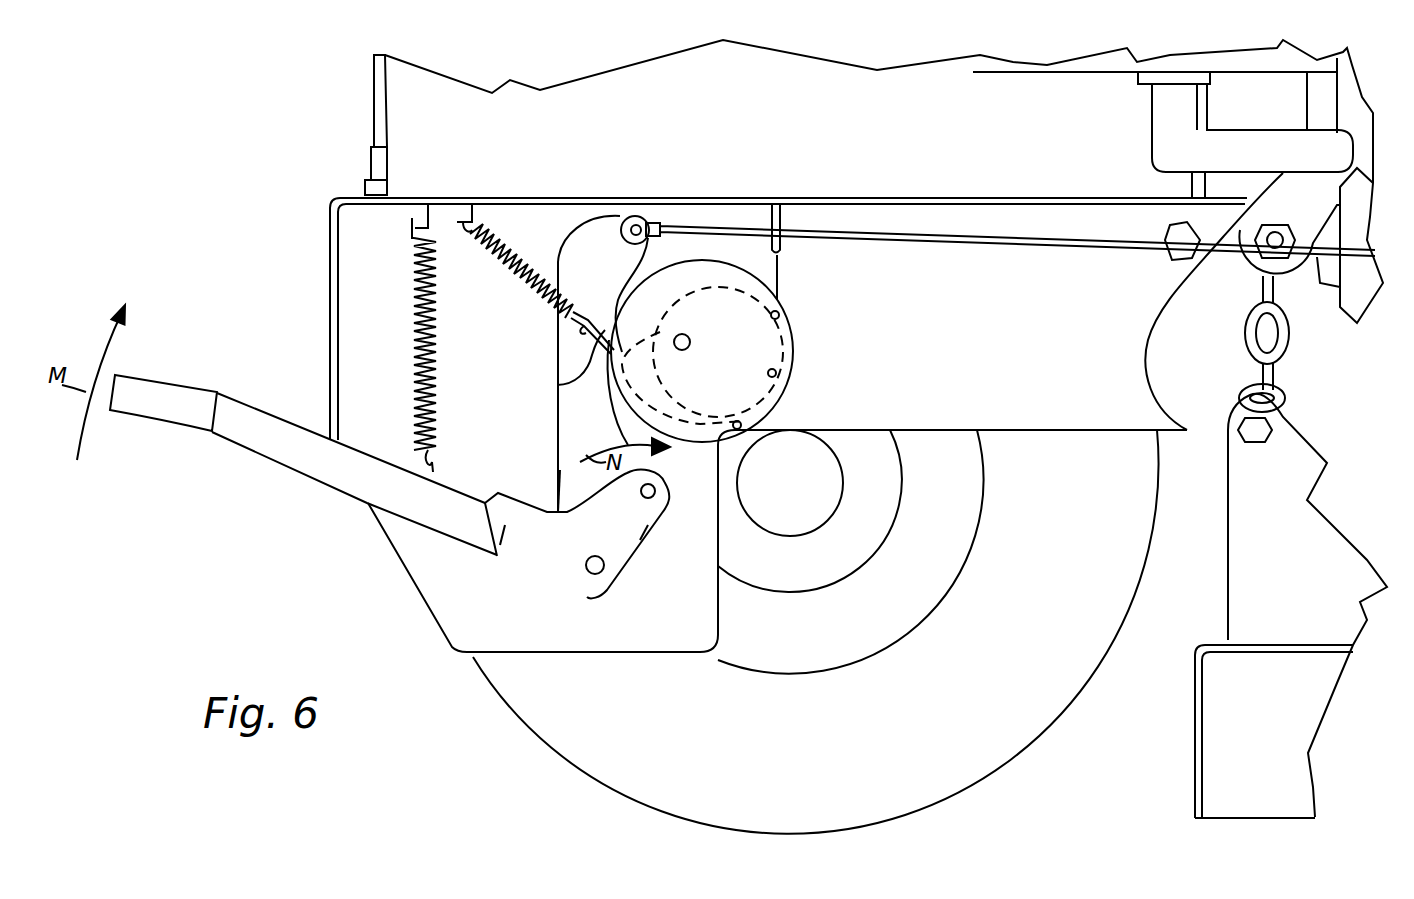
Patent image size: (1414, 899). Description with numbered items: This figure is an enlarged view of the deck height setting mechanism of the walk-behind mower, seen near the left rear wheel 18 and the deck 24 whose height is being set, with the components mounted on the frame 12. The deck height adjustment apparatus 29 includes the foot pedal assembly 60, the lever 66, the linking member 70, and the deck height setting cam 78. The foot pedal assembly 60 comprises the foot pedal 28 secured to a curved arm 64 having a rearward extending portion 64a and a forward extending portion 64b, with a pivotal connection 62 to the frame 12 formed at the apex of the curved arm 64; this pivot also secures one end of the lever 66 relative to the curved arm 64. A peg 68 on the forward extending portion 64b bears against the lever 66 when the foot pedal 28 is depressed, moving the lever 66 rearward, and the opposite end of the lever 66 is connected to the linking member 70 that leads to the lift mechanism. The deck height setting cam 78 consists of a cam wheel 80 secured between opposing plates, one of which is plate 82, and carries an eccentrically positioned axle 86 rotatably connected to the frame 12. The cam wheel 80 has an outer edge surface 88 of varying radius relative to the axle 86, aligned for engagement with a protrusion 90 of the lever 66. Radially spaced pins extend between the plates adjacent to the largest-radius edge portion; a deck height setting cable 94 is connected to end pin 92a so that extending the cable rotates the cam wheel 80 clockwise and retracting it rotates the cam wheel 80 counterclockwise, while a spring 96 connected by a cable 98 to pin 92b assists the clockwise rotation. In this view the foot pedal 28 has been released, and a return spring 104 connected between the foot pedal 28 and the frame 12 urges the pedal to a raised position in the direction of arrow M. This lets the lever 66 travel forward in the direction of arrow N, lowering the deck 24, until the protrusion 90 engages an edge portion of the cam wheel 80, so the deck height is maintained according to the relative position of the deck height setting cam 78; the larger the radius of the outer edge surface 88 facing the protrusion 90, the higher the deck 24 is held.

The frame 12 is at (355, 280).
The left rear wheel 18 is at (905, 805).
The deck 24 is at (1228, 765).
The foot pedal 28 is at (290, 455).
The deck height adjustment apparatus 29 is at (937, 745).
The foot pedal assembly 60 is at (578, 642).
The pivotal connection 62 is at (592, 575).
The curved arm 64 is at (524, 603).
The rearward extending portion 64a is at (510, 548).
The forward extending portion 64b is at (637, 537).
The lever 66 is at (560, 470).
The peg 68 is at (652, 498).
The linking member 70 is at (993, 248).
The deck height setting cam 78 is at (842, 280).
The cam wheel 80 is at (723, 392).
The opposing plate 82 is at (800, 345).
The axle 86 is at (690, 337).
The outer edge surface 88 is at (672, 272).
The protrusion 90 is at (633, 300).
The end pin 92a is at (735, 430).
The pin 92b is at (792, 318).
The deck height setting cable 94 is at (780, 262).
The spring 96 is at (497, 258).
The cable 98 is at (557, 385).
The return spring 104 is at (414, 390).